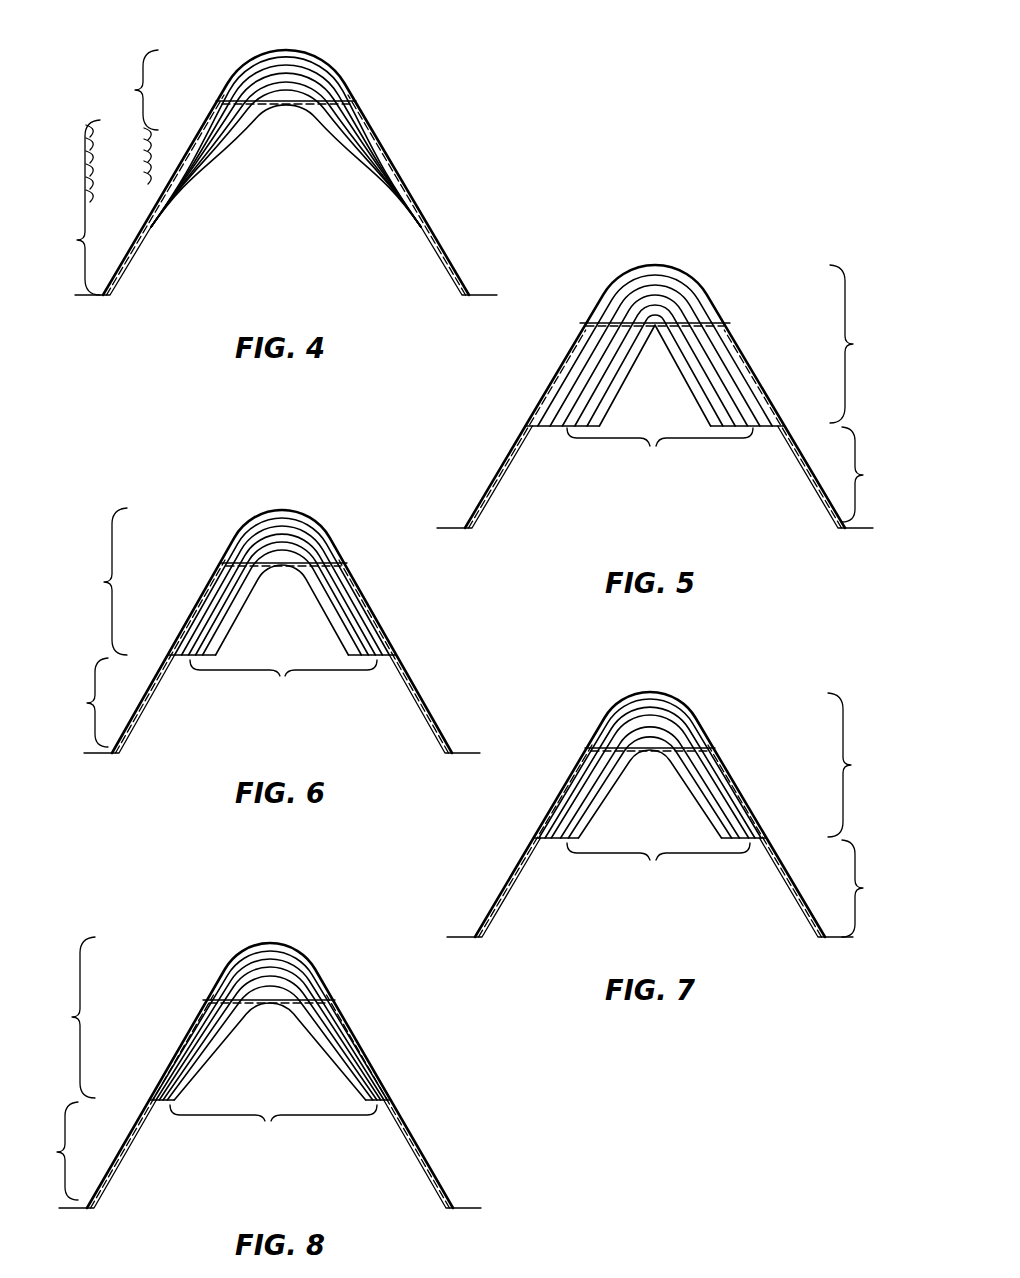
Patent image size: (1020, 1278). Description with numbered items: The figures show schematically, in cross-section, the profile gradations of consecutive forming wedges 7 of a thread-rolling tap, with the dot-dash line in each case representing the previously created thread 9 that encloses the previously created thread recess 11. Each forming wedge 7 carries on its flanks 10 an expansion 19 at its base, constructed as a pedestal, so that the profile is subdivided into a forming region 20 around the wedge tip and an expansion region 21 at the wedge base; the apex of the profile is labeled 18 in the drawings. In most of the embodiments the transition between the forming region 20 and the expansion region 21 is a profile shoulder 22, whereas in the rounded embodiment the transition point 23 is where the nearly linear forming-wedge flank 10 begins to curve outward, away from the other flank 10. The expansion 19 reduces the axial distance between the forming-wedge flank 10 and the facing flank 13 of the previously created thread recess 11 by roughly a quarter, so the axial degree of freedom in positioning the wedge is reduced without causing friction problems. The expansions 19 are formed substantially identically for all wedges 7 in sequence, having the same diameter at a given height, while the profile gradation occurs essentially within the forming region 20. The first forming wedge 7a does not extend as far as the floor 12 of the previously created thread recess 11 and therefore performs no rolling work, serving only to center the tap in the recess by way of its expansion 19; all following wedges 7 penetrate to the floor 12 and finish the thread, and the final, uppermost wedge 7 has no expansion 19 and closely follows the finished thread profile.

In FIG. 4, the forming wedge 7 is at (240, 110).
In FIG. 5, the forming wedge 7 is at (594, 345).
In FIG. 6, the forming wedge 7 is at (232, 592).
In FIG. 7, the forming wedge 7 is at (607, 740).
In FIG. 8, the forming wedge 7 is at (217, 1033).
In FIG. 4, the first forming wedge 7a is at (190, 210).
In FIG. 5, the first forming wedge 7a is at (623, 387).
In FIG. 6, the first forming wedge 7a is at (230, 620).
In FIG. 7, the first forming wedge 7a is at (622, 773).
In FIG. 8, the first forming wedge 7a is at (210, 1060).
In FIG. 4, the previously created thread 9 is at (423, 220).
In FIG. 5, the previously created thread 9 is at (508, 445).
In FIG. 6, the previously created thread 9 is at (413, 683).
In FIG. 7, the previously created thread 9 is at (500, 887).
In FIG. 8, the previously created thread 9 is at (443, 1182).
In FIG. 4, the forming-wedge flank 10 is at (140, 233).
In FIG. 5, the forming-wedge flank 10 is at (788, 427).
In FIG. 6, the forming-wedge flank 10 is at (388, 655).
In FIG. 7, the forming-wedge flank 10 is at (507, 870).
In FIG. 8, the forming-wedge flank 10 is at (400, 1113).
In FIG. 4, the previously created thread recess 11 is at (272, 278).
In FIG. 5, the previously created thread recess 11 is at (647, 511).
In FIG. 6, the previously created thread recess 11 is at (270, 731).
In FIG. 7, the previously created thread recess 11 is at (640, 924).
In FIG. 8, the previously created thread recess 11 is at (260, 1181).
In FIG. 4, the floor of the previously created thread recess 12 is at (337, 90).
In FIG. 5, the floor of the previously created thread recess 12 is at (697, 300).
In FIG. 6, the floor of the previously created thread recess 12 is at (285, 562).
In FIG. 7, the floor of the previously created thread recess 12 is at (658, 740).
In FIG. 8, the floor of the previously created thread recess 12 is at (275, 998).
In FIG. 4, the facing flank of the previously created thread recess 13 is at (120, 283).
In FIG. 5, the facing flank of the previously created thread recess 13 is at (487, 500).
In FIG. 6, the facing flank of the previously created thread recess 13 is at (127, 730).
In FIG. 7, the facing flank of the previously created thread recess 13 is at (488, 915).
In FIG. 8, the facing flank of the previously created thread recess 13 is at (413, 1130).
In FIG. 4, the spring apex 18 is at (287, 72).
In FIG. 5, the spring apex 18 is at (676, 263).
In FIG. 6, the spring apex 18 is at (287, 540).
In FIG. 7, the spring apex 18 is at (658, 713).
In FIG. 8, the spring apex 18 is at (275, 973).
In FIG. 4, the expansion 19 is at (437, 252).
In FIG. 5, the expansion 19 is at (495, 478).
In FIG. 6, the expansion 19 is at (142, 705).
In FIG. 7, the expansion 19 is at (495, 903).
In FIG. 8, the expansion 19 is at (125, 1152).
In FIG. 4, the forming region 20 is at (136, 117).
In FIG. 5, the forming region 20 is at (851, 344).
In FIG. 6, the forming region 20 is at (101, 581).
In FIG. 7, the forming region 20 is at (851, 765).
In FIG. 8, the forming region 20 is at (70, 1017).
In FIG. 4, the expansion region 21 is at (78, 207).
In FIG. 5, the expansion region 21 is at (862, 474).
In FIG. 6, the expansion region 21 is at (87, 702).
In FIG. 7, the expansion region 21 is at (862, 888).
In FIG. 8, the expansion region 21 is at (57, 1151).
In FIG. 5, the profile shoulder 22 is at (660, 441).
In FIG. 6, the profile shoulder 22 is at (283, 672).
In FIG. 7, the profile shoulder 22 is at (658, 855).
In FIG. 8, the profile shoulder 22 is at (273, 1117).
In FIG. 4, the transition point 23 is at (230, 163).